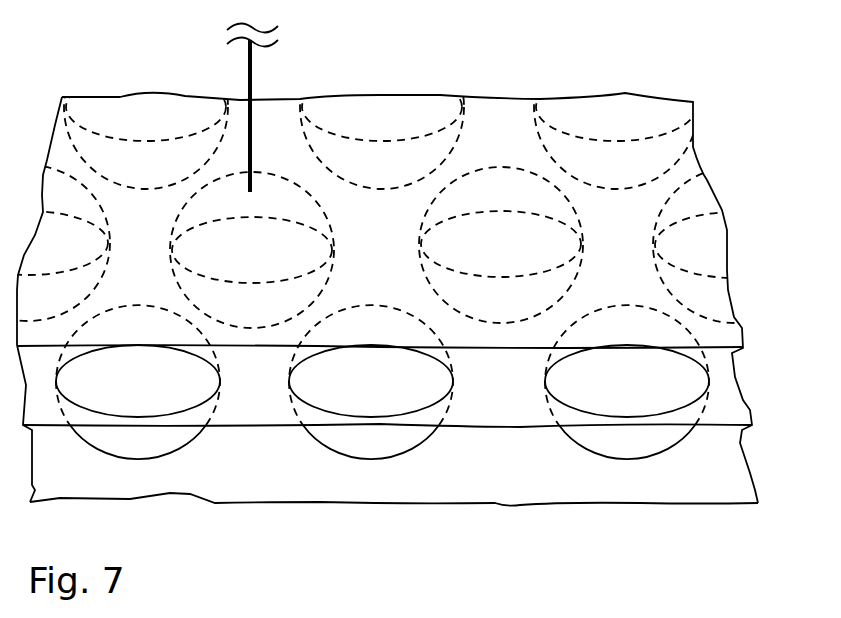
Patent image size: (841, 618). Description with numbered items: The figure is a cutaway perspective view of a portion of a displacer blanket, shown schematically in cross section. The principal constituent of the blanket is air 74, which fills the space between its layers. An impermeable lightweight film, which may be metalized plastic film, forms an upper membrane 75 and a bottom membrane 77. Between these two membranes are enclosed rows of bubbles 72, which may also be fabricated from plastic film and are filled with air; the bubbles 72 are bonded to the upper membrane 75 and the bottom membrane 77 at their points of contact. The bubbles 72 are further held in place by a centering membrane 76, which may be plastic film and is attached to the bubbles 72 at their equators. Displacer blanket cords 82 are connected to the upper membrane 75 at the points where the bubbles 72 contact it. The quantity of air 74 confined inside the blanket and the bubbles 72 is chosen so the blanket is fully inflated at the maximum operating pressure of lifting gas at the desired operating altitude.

The bubbles 72 is at (333, 270).
The air 74 is at (257, 403).
The upper membrane 75 is at (745, 334).
The centering membrane 76 is at (743, 402).
The bottom membrane 77 is at (757, 495).
The displacer blanket cords 82 is at (254, 76).